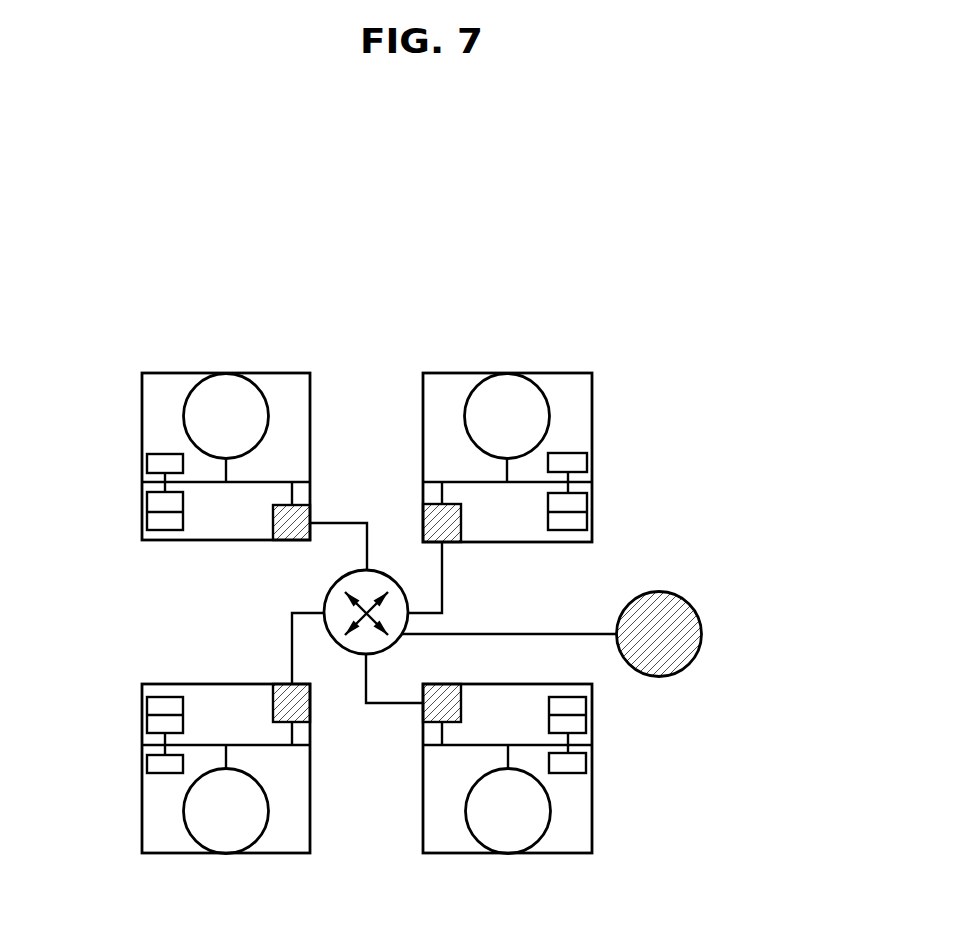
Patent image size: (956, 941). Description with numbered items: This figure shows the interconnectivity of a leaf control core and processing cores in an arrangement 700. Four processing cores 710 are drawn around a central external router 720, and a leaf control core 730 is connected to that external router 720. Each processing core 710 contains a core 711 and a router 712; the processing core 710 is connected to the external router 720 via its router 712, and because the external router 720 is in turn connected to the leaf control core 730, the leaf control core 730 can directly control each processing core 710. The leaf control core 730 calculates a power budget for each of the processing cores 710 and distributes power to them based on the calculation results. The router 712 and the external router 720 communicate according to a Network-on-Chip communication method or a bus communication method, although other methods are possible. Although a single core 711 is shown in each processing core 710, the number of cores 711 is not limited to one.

The system 700 is at (630, 334).
The processing core 710 is at (265, 373).
The core 711 is at (183, 413).
The router 712 is at (278, 520).
The external router 720 is at (328, 597).
The leaf control core 730 is at (702, 633).